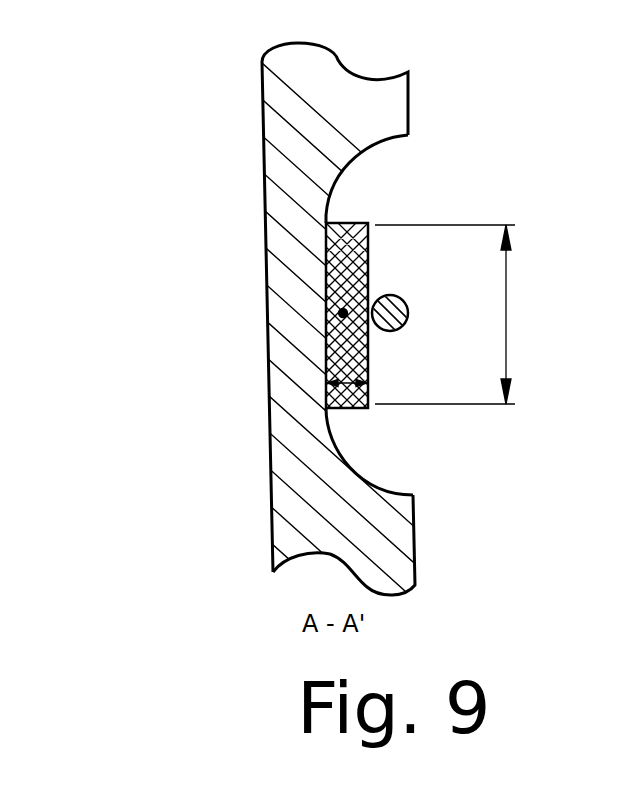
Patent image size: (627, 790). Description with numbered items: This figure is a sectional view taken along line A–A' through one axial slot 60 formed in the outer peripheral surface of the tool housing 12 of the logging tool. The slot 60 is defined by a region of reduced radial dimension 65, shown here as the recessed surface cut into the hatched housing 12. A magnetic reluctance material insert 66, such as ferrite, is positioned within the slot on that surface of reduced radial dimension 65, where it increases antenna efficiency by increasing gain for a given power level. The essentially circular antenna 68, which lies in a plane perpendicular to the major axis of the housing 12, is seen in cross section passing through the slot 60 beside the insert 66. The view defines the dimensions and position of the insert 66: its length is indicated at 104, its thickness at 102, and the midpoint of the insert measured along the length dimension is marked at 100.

The tool housing 12 is at (380, 106).
The region of reduced radial dimension 65 is at (326, 203).
The magnetic reluctance material insert 66 is at (369, 222).
The midpoint of the insert 100 is at (345, 311).
The antenna 68 is at (404, 302).
The thickness of the insert 102 is at (350, 380).
The length of the insert 104 is at (507, 295).
The axial slot 60 is at (378, 462).